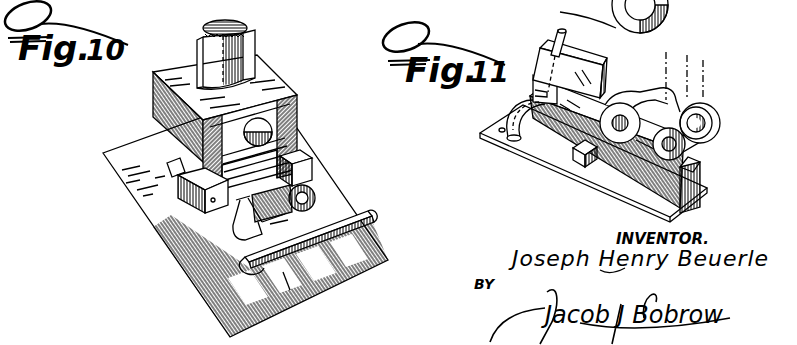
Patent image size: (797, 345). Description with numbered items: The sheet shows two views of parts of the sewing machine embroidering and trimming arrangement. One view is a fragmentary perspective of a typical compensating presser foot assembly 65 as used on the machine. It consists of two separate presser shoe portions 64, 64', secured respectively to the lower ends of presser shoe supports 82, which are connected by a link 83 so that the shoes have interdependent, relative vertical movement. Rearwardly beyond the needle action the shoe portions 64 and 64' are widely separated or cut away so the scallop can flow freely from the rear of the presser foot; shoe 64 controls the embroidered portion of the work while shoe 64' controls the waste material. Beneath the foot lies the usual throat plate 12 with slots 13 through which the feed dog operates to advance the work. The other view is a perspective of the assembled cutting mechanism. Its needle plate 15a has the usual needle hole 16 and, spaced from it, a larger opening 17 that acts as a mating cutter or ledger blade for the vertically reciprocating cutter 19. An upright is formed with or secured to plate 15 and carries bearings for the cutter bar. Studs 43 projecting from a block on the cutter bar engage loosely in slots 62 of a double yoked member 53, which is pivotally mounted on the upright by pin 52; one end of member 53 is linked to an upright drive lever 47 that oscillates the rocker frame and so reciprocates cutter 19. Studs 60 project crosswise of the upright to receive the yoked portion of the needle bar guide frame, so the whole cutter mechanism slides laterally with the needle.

In FIG. 10, the throat plate 12 is at (342, 270).
In FIG. 10, the slots 13 is at (250, 242).
In FIG. 10, the plate 15 is at (300, 196).
In FIG. 11, the plate 15 is at (624, 194).
In FIG. 11, the needle plate 15a is at (543, 150).
In FIG. 10, the needle hole 16 is at (286, 292).
In FIG. 11, the needle hole 16 is at (500, 132).
In FIG. 10, the opening 17 is at (316, 198).
In FIG. 11, the opening 17 is at (514, 140).
In FIG. 11, the cutter 19 is at (564, 46).
In FIG. 11, the studs 43 is at (520, 92).
In FIG. 11, the drive lever 47 is at (704, 62).
In FIG. 11, the pin 52 is at (622, 120).
In FIG. 11, the double yoked member 53 is at (700, 103).
In FIG. 10, the studs 60 is at (238, 44).
In FIG. 11, the studs 60 is at (577, 166).
In FIG. 11, the slots 62 is at (560, 16).
In FIG. 10, the presser shoe portion 64 is at (213, 292).
In FIG. 10, the presser shoe portion 64' is at (338, 230).
In FIG. 10, the compensating presser foot assembly 65 is at (272, 90).
In FIG. 10, the presser shoe supports 82 is at (203, 151).
In FIG. 10, the link 83 is at (258, 104).